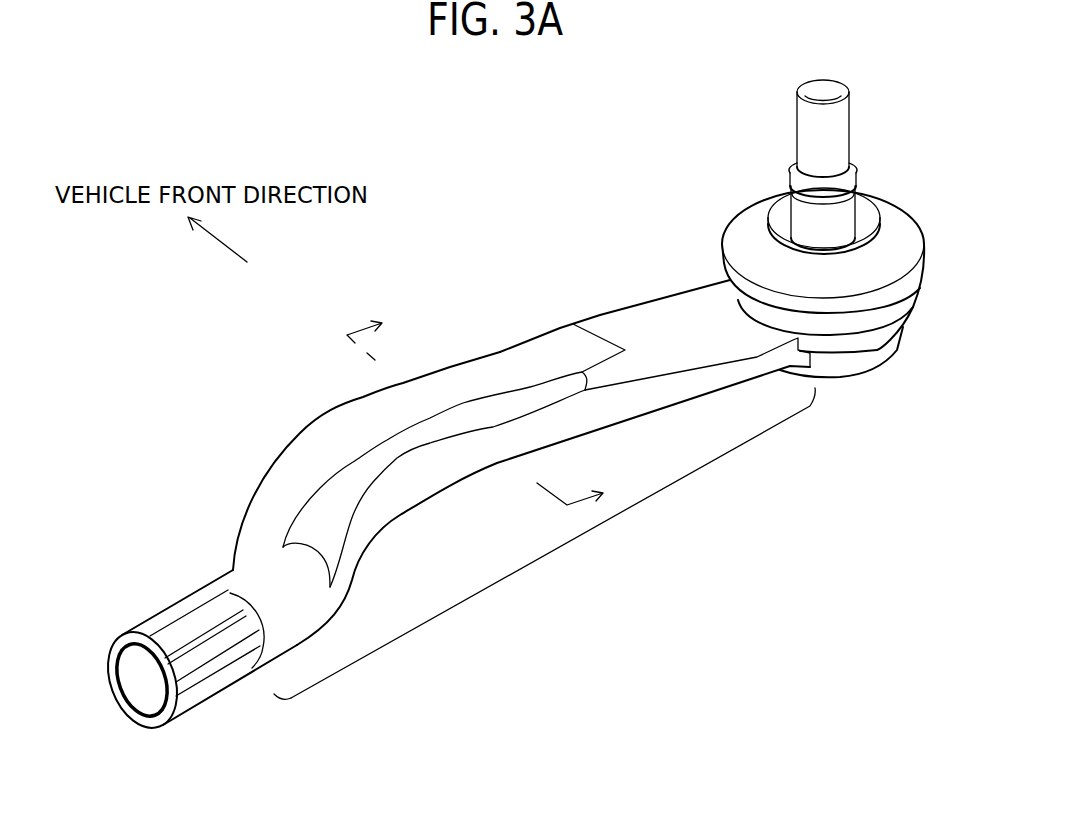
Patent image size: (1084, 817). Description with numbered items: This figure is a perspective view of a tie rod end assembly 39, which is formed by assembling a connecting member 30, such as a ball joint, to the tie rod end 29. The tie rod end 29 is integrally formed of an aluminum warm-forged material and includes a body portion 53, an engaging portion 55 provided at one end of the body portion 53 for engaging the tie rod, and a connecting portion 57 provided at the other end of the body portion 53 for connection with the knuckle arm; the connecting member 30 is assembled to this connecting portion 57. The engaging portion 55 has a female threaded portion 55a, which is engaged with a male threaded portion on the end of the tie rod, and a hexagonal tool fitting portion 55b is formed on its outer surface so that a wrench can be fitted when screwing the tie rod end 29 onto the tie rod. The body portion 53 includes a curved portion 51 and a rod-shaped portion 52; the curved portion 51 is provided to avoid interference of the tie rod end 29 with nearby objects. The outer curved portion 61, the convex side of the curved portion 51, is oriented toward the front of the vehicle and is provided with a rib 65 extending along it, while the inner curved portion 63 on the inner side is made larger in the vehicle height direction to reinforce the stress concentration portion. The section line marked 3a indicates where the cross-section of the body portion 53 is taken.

The tie rod end assembly 39 is at (649, 198).
The connecting member 30 is at (893, 220).
The connecting portion 57 is at (852, 360).
The tie rod end 29 is at (648, 293).
The curved portion 51 is at (298, 460).
The outer curved portion 61 is at (405, 400).
The rod-shaped portion 52 is at (580, 340).
The inner curved portion 63 is at (424, 443).
The rib 65 is at (498, 428).
The body portion 53 is at (563, 545).
The engaging portion 55 is at (200, 665).
The female threaded portion 55a is at (142, 682).
The tool fitting portion 55b is at (195, 630).
The section line 3a- 3a is at (456, 425).